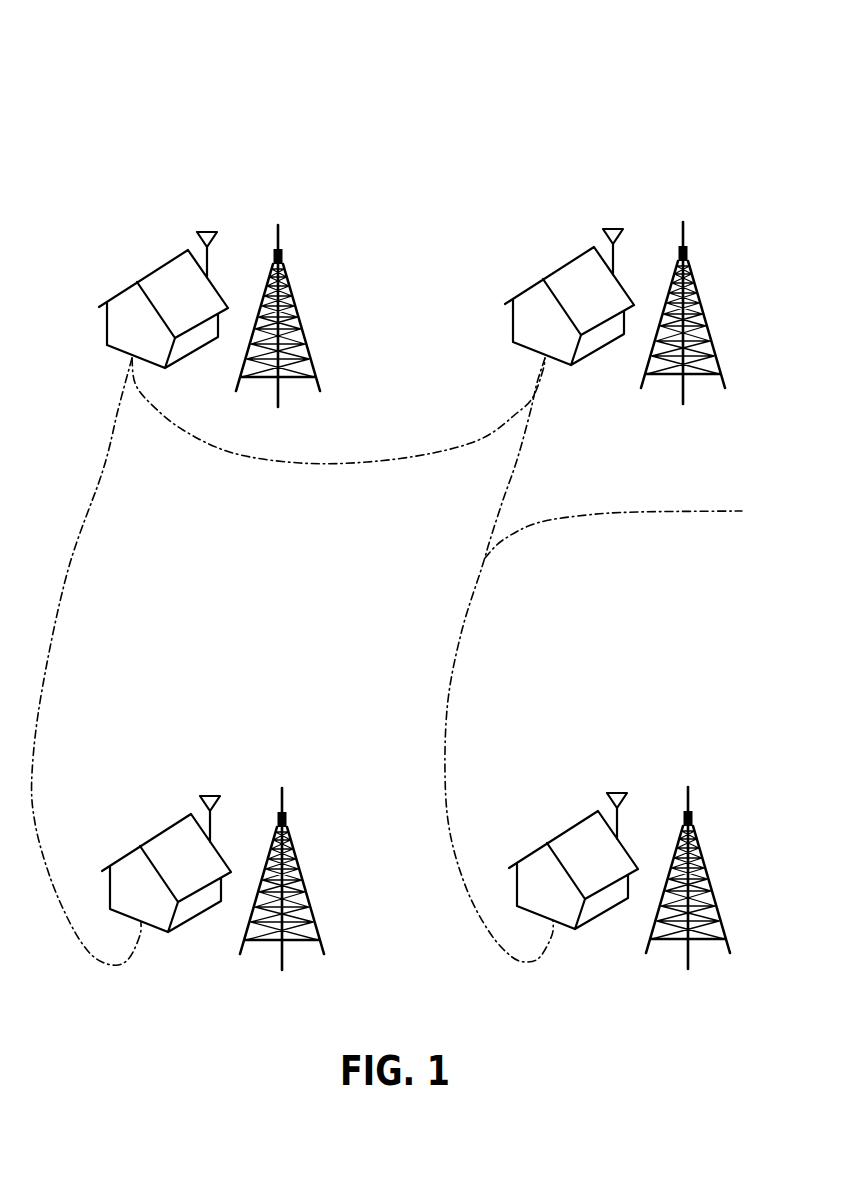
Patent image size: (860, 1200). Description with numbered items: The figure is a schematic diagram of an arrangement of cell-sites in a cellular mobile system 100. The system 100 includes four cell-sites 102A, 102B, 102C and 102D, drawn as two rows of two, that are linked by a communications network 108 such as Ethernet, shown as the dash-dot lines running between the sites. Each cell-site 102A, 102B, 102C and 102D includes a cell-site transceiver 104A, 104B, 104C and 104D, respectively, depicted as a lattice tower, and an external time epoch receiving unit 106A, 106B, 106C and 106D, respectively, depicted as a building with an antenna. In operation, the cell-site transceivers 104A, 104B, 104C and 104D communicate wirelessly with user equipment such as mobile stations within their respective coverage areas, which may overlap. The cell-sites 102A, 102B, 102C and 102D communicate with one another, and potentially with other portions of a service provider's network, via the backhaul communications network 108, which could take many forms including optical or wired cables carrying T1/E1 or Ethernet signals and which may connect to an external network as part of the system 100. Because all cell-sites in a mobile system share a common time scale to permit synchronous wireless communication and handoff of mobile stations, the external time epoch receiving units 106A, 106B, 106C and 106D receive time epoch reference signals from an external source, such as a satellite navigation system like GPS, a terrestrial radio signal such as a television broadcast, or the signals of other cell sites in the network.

The cellular mobile system 100 is at (96, 62).
The cell-site 102A is at (275, 189).
The cell-site 102B is at (682, 186).
The cell-site 102C is at (279, 752).
The cell-site 102D is at (685, 749).
The cell-site transceiver 104A is at (309, 307).
The cell-site transceiver 104B is at (715, 304).
The cell-site transceiver 104C is at (314, 871).
The cell-site transceiver 104D is at (719, 869).
The external time epoch receiving unit 106A is at (116, 271).
The external time epoch receiving unit 106B is at (523, 269).
The external time epoch receiving unit 106C is at (120, 836).
The external time epoch receiving unit 106D is at (528, 832).
The communications network 108 is at (707, 512).